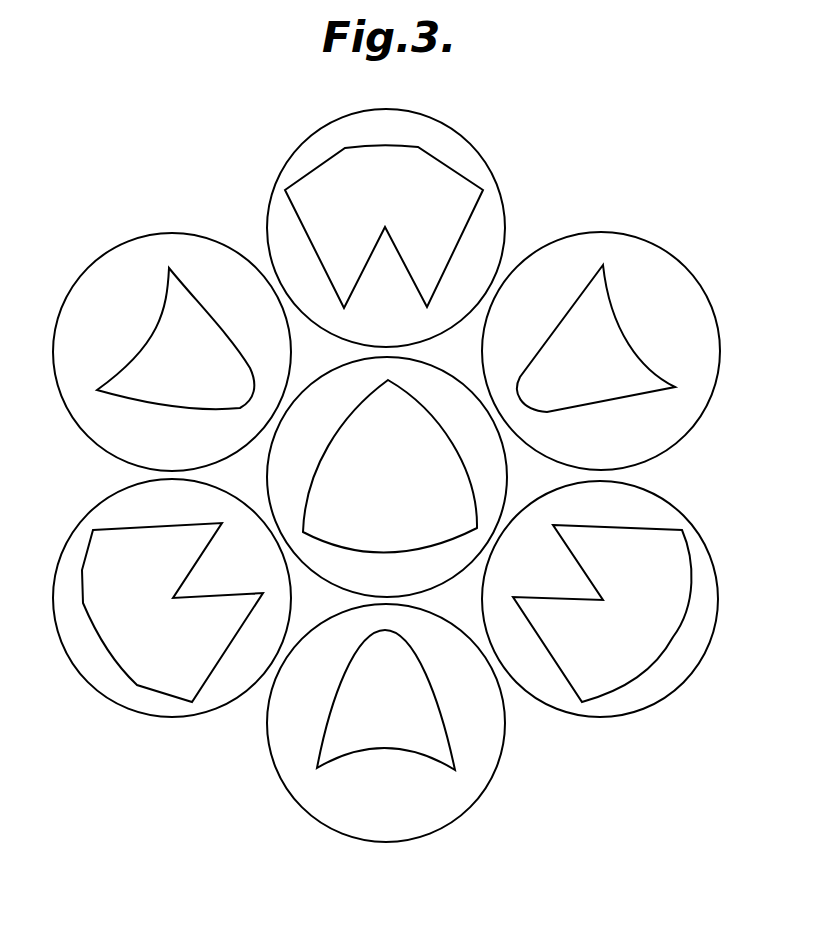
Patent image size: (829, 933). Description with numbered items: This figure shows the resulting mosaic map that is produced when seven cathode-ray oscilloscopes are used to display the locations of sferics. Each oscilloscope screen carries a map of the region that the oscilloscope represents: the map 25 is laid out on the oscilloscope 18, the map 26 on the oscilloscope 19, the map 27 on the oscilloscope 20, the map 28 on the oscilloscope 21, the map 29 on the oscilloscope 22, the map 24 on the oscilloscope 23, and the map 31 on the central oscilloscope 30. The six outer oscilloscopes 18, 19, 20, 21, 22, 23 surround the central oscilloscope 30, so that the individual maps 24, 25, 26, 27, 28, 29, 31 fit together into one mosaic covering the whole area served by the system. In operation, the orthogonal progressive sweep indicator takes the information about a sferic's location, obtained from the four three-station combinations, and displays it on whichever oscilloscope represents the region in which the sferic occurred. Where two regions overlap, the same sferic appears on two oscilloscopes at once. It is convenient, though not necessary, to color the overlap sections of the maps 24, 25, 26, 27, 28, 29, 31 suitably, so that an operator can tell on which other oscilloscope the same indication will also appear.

The oscilloscope 18 is at (472, 147).
The oscilloscope 19 is at (704, 288).
The oscilloscope 20 is at (719, 588).
The oscilloscope 21 is at (394, 842).
The oscilloscope 22 is at (77, 668).
The oscilloscope 23 is at (70, 300).
The map 24 is at (175, 338).
The map 25 is at (384, 226).
The map 26 is at (596, 338).
The map 27 is at (602, 613).
The map 28 is at (386, 700).
The map 29 is at (172, 612).
The oscilloscope 30 is at (442, 370).
The map 31 is at (390, 466).